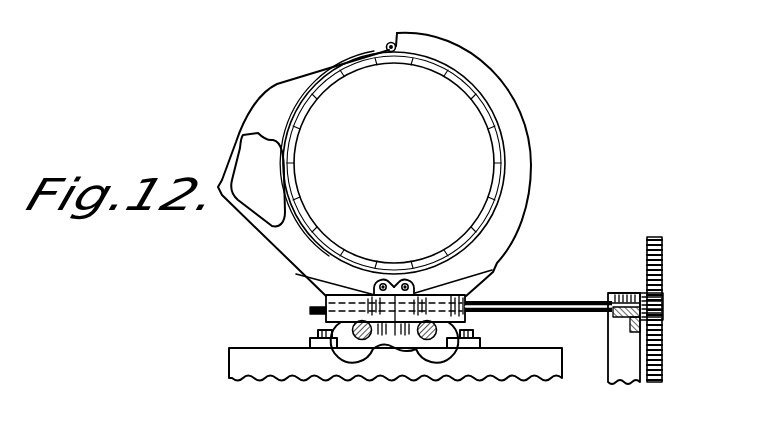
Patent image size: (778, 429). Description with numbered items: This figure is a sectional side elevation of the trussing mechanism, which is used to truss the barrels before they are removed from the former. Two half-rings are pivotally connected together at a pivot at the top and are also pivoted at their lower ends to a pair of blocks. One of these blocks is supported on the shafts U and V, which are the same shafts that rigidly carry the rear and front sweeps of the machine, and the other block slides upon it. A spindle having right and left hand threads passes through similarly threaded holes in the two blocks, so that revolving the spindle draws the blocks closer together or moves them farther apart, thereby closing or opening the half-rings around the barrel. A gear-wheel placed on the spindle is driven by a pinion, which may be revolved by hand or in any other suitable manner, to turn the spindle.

The shaft U is at (359, 340).
The shaft V is at (430, 342).